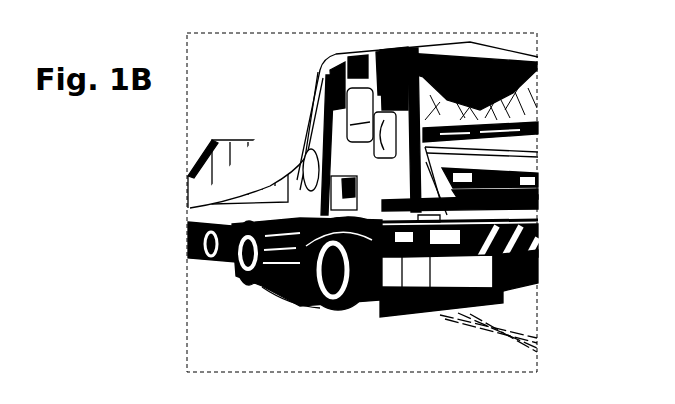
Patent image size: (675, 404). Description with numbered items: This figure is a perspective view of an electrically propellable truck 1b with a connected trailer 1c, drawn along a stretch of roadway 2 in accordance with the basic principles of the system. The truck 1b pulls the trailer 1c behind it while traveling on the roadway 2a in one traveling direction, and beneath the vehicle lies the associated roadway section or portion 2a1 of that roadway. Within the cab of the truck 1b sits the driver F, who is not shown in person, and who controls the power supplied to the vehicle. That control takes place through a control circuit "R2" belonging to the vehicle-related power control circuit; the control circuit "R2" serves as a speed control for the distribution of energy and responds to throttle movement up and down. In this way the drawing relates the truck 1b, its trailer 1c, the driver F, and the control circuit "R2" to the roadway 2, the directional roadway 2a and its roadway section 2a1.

The truck 1b is at (340, 68).
The trailer 1c is at (251, 138).
The driver F is at (534, 96).
The stretch of a roadway 2 is at (256, 323).
The control circuit for energy distribution R2 is at (302, 311).
The roadway in one traveling direction 2a is at (532, 319).
The roadway section in one traveling direction 2a1 is at (487, 337).